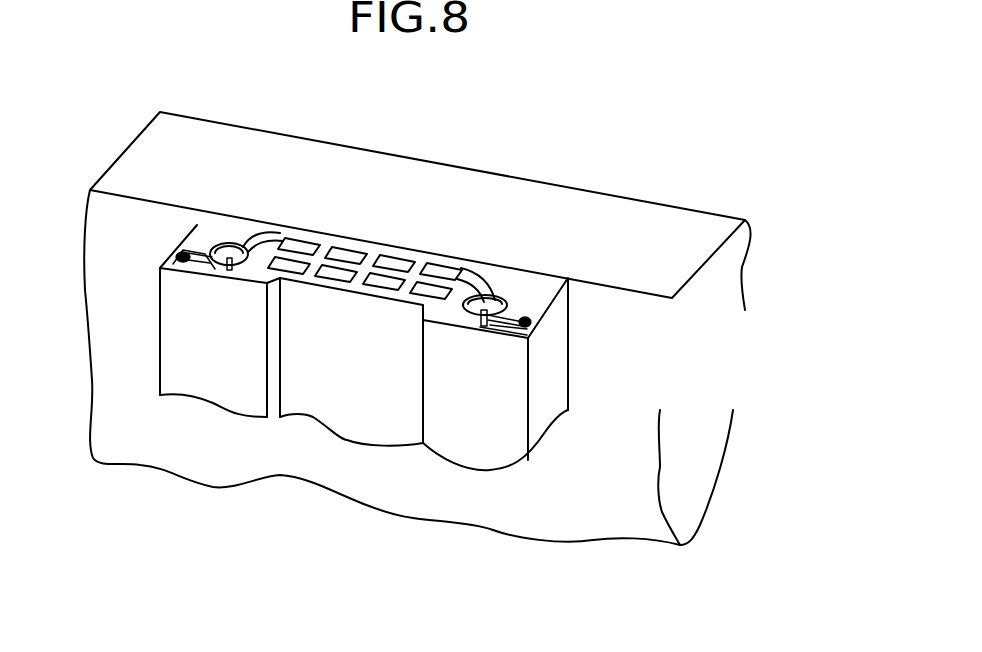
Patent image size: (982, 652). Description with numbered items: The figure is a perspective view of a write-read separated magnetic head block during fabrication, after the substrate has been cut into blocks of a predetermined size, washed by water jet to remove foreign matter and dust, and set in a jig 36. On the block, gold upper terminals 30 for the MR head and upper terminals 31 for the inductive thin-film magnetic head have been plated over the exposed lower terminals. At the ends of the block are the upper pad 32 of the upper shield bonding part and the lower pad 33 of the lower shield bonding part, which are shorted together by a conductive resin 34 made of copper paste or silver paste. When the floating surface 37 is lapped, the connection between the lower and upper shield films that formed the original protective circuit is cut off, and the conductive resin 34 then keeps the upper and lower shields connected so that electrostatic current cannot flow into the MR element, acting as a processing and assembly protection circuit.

The upper terminal for the MR head 30 is at (343, 260).
The upper terminal for the inductive thin-film magnetic head 31 is at (277, 242).
The upper pad 32 is at (168, 254).
The lower pad 33 is at (178, 247).
The conductive resin 34 is at (183, 250).
The jig 36 is at (557, 184).
The floating surface 37 is at (483, 432).